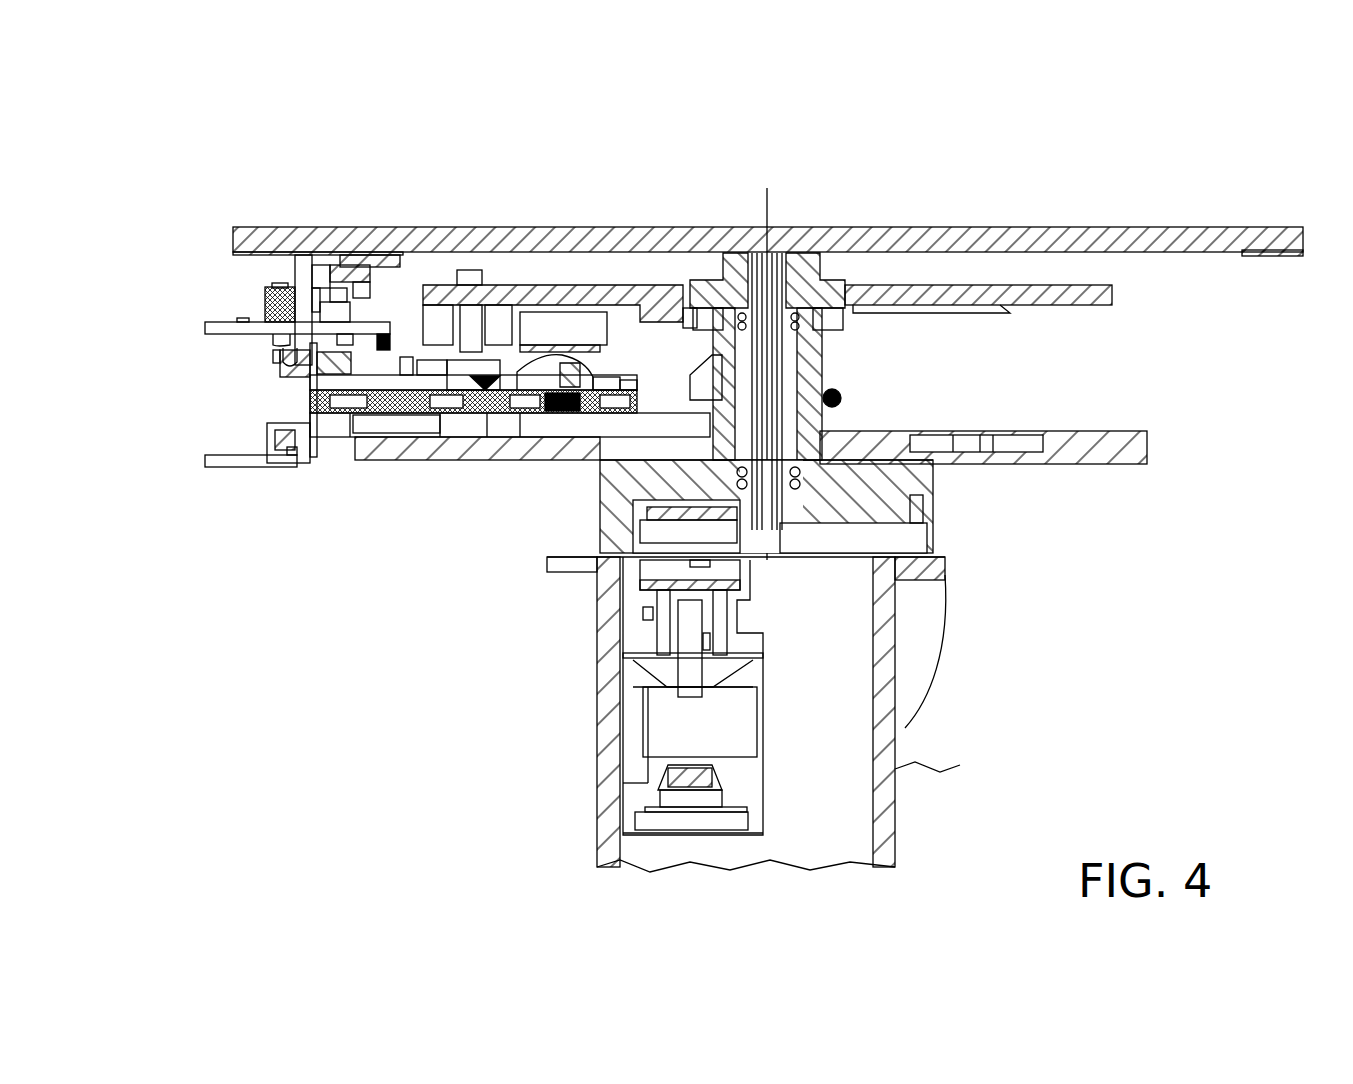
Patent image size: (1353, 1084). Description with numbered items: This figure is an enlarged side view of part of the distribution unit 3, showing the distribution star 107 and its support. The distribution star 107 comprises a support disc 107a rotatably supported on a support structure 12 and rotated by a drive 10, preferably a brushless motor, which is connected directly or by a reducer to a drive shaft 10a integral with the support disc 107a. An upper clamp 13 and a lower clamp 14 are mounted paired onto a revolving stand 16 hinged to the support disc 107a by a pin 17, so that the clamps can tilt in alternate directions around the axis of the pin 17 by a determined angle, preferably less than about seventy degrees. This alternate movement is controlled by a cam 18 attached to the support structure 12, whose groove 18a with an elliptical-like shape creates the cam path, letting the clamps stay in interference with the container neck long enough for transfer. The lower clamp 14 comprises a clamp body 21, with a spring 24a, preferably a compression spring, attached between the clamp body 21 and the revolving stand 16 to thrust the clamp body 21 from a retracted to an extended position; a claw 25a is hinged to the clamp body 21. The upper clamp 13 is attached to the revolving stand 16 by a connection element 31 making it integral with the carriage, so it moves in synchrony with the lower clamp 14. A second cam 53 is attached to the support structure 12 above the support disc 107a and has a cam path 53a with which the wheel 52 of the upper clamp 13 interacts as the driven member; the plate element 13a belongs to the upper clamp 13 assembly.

The distribution unit 3 is at (1240, 193).
The drive 10 is at (637, 740).
The drive shaft 10a is at (793, 380).
The support structure 12 is at (895, 765).
The upper clamp 13 is at (186, 342).
The arm plate 13a is at (213, 325).
The lower clamp 14 is at (255, 478).
The revolving stand 16 is at (617, 375).
The pin 17 is at (508, 277).
The cam 18 is at (1002, 460).
The groove 18a is at (1018, 448).
The clamp body 21 is at (293, 417).
The spring 24a is at (382, 423).
The claw 25a is at (232, 470).
The connection element 31 is at (292, 366).
The wheel 52 is at (327, 257).
The second cam 53 is at (647, 227).
The cam path 53a is at (378, 262).
The distribution star 107 is at (1040, 325).
The support disc 107a is at (1089, 304).